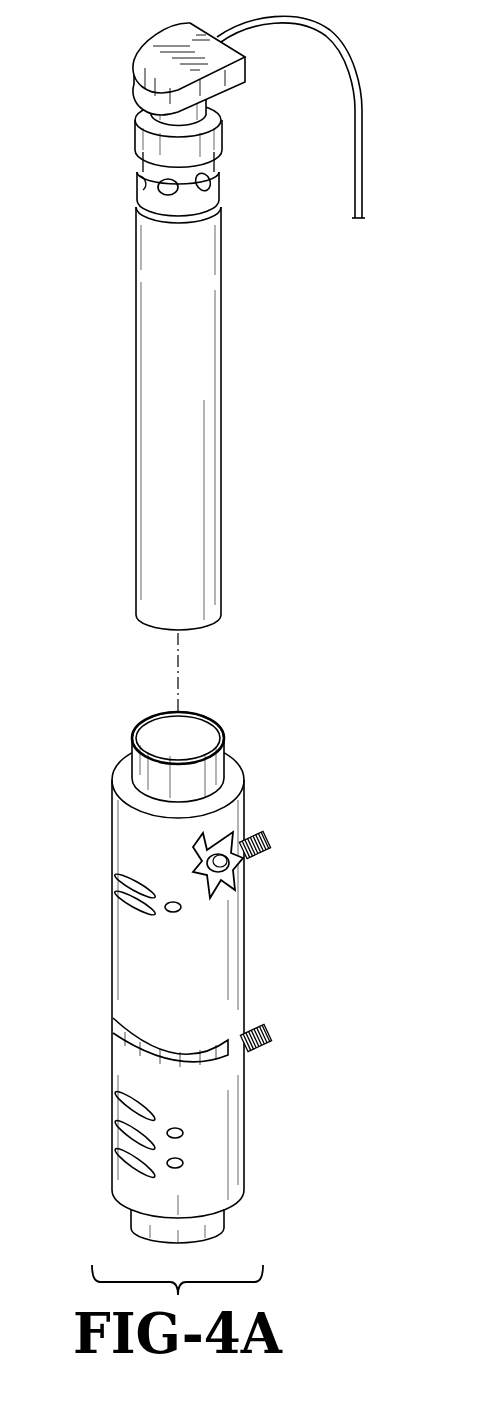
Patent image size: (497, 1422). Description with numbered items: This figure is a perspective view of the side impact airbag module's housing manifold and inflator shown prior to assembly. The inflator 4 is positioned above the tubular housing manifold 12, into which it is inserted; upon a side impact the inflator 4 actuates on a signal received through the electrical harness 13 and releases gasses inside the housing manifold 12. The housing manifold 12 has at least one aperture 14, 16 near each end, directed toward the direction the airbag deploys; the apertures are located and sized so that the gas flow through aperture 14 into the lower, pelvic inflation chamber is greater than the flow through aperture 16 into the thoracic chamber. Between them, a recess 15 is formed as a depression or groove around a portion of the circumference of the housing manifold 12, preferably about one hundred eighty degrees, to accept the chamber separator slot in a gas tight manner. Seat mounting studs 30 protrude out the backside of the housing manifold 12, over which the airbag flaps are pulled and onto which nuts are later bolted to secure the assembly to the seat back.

The inflator 4 is at (160, 302).
The electrical harness 13 is at (356, 170).
The housing manifold 12 is at (125, 778).
The seat mounting studs 30 is at (267, 836).
The aperture 16 is at (132, 904).
The recess 15 is at (131, 1051).
The aperture 14 is at (118, 1098).